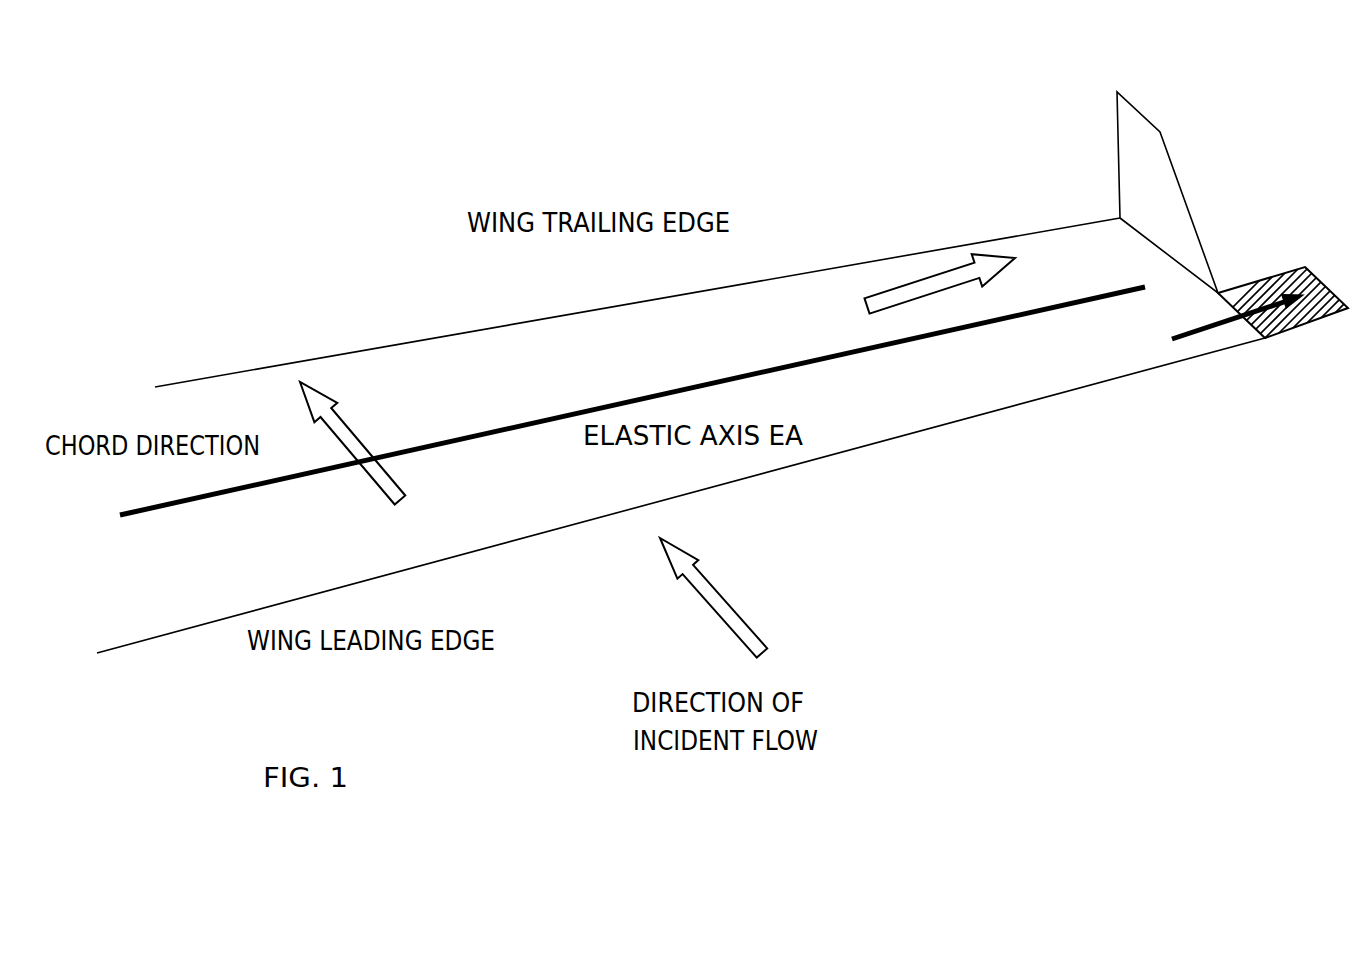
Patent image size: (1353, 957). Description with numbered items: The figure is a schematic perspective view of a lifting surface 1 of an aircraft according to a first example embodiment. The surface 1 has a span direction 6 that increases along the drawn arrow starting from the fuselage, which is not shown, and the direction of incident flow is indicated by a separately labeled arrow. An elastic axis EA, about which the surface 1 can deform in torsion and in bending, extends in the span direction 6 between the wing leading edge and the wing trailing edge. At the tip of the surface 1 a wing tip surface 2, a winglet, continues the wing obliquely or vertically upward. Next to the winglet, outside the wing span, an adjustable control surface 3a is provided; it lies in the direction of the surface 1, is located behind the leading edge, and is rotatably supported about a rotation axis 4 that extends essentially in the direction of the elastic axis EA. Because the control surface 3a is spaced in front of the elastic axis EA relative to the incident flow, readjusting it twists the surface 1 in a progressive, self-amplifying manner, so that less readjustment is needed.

The surface 1 is at (478, 364).
The wing tip surface 2 is at (1131, 144).
The control surface 3a is at (1309, 357).
The rotation axis 4 is at (1200, 338).
The span direction 6 is at (771, 307).